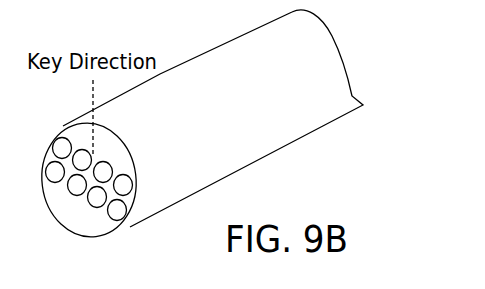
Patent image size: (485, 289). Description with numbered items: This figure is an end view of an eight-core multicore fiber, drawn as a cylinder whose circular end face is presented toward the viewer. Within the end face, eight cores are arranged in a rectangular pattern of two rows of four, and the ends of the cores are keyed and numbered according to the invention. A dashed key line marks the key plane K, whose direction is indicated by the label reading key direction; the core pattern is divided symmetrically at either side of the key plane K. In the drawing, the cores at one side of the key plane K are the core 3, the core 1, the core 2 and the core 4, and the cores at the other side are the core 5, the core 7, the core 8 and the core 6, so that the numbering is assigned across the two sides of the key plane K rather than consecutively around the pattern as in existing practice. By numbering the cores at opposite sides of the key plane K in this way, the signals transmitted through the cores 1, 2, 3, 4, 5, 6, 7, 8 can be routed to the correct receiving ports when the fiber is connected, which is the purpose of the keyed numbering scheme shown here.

The core 1 is at (82, 160).
The core 2 is at (103, 172).
The core 3 is at (62, 148).
The core 4 is at (123, 185).
The core 5 is at (55, 172).
The core 6 is at (117, 210).
The core 7 is at (77, 185).
The core 8 is at (97, 197).
The key plane K is at (92, 100).